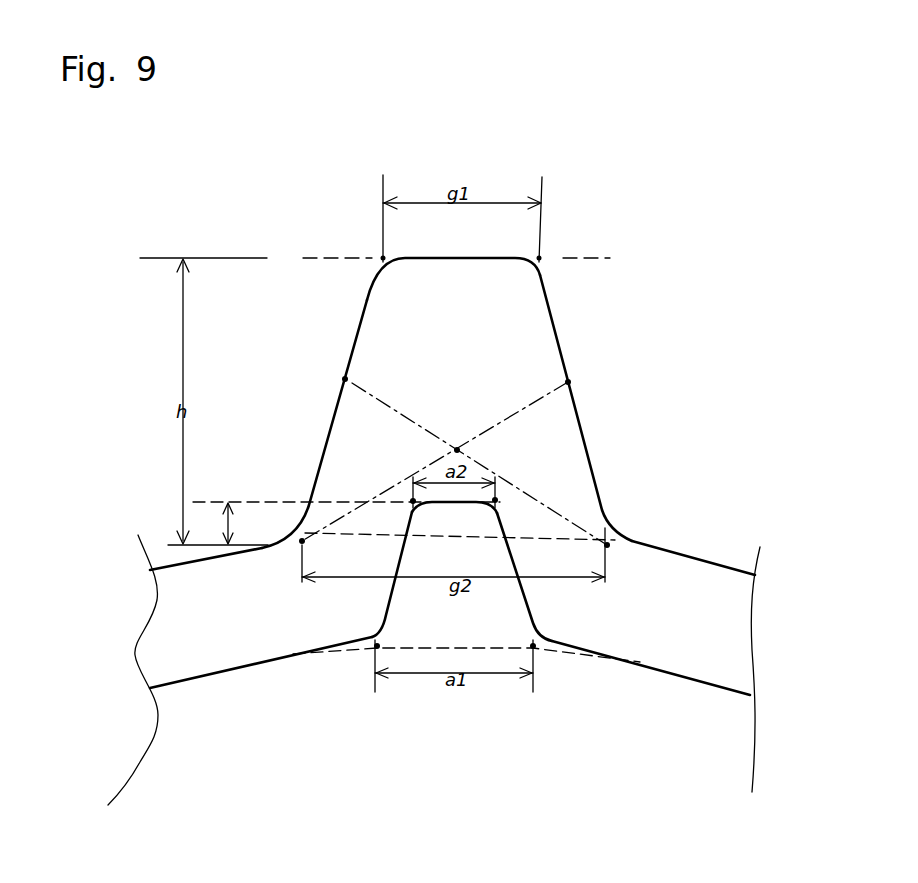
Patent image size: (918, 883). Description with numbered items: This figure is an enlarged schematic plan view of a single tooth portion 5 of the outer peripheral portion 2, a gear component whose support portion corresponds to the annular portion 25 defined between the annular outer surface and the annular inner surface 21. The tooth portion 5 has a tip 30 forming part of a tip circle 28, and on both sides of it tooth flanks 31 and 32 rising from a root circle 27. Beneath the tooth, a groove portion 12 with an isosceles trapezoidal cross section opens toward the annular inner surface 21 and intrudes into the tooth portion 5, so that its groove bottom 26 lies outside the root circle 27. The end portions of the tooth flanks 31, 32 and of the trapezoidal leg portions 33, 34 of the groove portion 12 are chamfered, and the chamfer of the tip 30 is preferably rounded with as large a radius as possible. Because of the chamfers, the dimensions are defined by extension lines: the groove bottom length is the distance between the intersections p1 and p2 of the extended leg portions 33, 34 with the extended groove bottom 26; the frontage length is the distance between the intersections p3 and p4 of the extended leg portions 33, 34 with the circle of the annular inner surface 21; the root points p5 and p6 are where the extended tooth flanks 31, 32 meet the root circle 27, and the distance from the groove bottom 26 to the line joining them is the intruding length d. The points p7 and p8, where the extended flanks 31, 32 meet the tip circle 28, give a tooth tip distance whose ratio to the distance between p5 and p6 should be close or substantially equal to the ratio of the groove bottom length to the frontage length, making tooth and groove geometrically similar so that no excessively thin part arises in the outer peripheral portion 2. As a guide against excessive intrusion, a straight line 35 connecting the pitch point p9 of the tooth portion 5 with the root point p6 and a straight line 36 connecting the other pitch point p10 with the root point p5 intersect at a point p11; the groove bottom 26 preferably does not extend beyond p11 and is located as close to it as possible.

The outer peripheral portion 2 is at (693, 648).
The tooth portion 5 is at (447, 403).
The groove portion 12 is at (450, 571).
The annular inner surface 21 is at (218, 678).
The annular portion 25 is at (213, 637).
The groove bottom 26 is at (450, 504).
The root circle 27 is at (538, 539).
The tip circle 28 is at (573, 256).
The tip 30 is at (455, 263).
The tooth flank 31 is at (356, 343).
The tooth flank 32 is at (566, 357).
The trapezoidal leg portion 33 is at (396, 589).
The trapezoidal leg portion 34 is at (530, 602).
The straight line 35 is at (372, 390).
The straight line 36 is at (532, 405).
The intersection p1 is at (410, 504).
The intersection p2 is at (498, 503).
The intersection p3 is at (378, 645).
The intersection p4 is at (532, 645).
The root point p5 is at (300, 546).
The root point p6 is at (610, 548).
The intersection point p7 is at (380, 254).
The intersection point p8 is at (541, 255).
The pitch point p9 is at (340, 380).
The pitch point p10 is at (572, 383).
The intersection p11 is at (458, 447).
The intruding length d is at (346, 523).